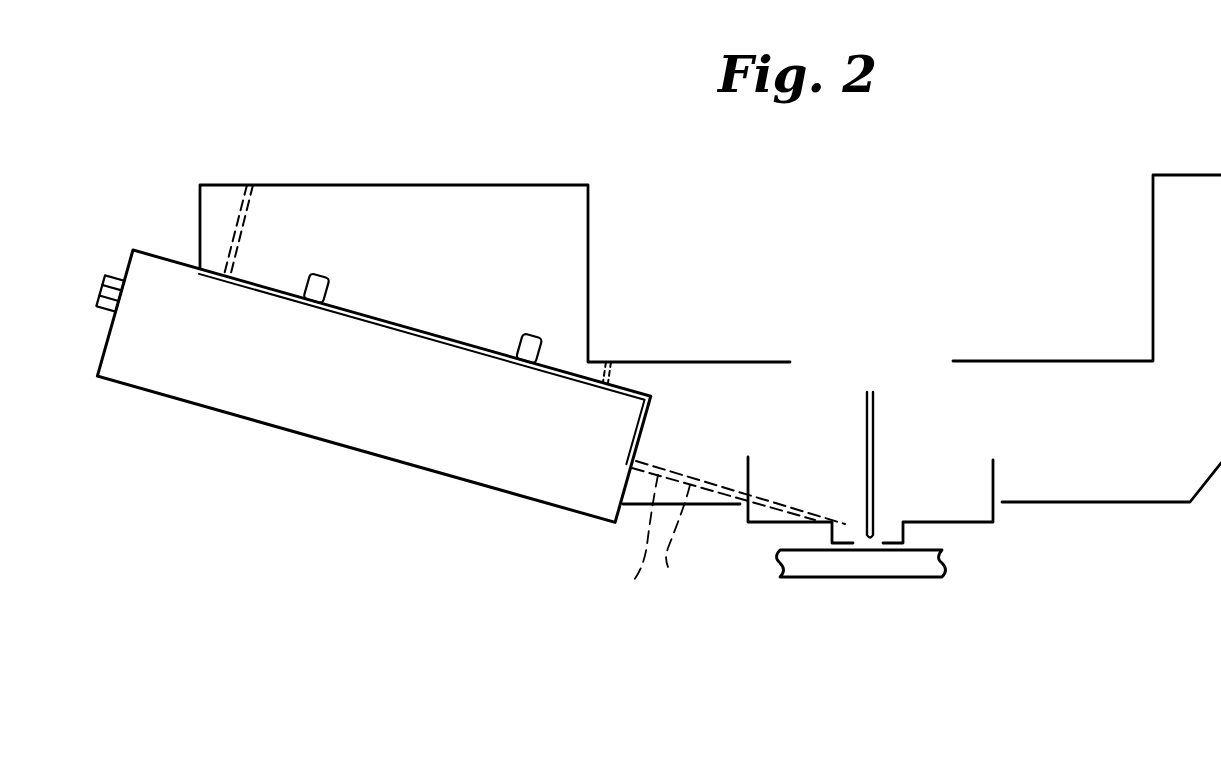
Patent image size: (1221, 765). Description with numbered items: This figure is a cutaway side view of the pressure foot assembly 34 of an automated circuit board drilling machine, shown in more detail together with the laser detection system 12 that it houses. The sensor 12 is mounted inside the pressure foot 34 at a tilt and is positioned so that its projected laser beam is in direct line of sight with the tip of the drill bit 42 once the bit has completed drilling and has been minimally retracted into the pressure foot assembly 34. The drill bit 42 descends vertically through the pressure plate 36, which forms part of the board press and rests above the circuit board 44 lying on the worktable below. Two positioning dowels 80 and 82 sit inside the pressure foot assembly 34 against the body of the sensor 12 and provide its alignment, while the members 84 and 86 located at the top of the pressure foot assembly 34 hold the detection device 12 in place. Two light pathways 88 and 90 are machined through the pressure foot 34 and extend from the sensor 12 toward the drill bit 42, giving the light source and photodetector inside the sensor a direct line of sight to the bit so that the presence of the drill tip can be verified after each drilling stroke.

The sensor 12 is at (266, 456).
The pressure foot assembly 34 is at (545, 108).
The pressure plate 36 is at (883, 532).
The drill bit 42 is at (873, 498).
The circuit boards 44 is at (955, 565).
The positioning dowel 80 is at (315, 272).
The positioning dowel 82 is at (534, 333).
The fastener 84 is at (252, 184).
The fastener 86 is at (616, 380).
The light pathway 88 is at (638, 577).
The light pathway 90 is at (668, 567).